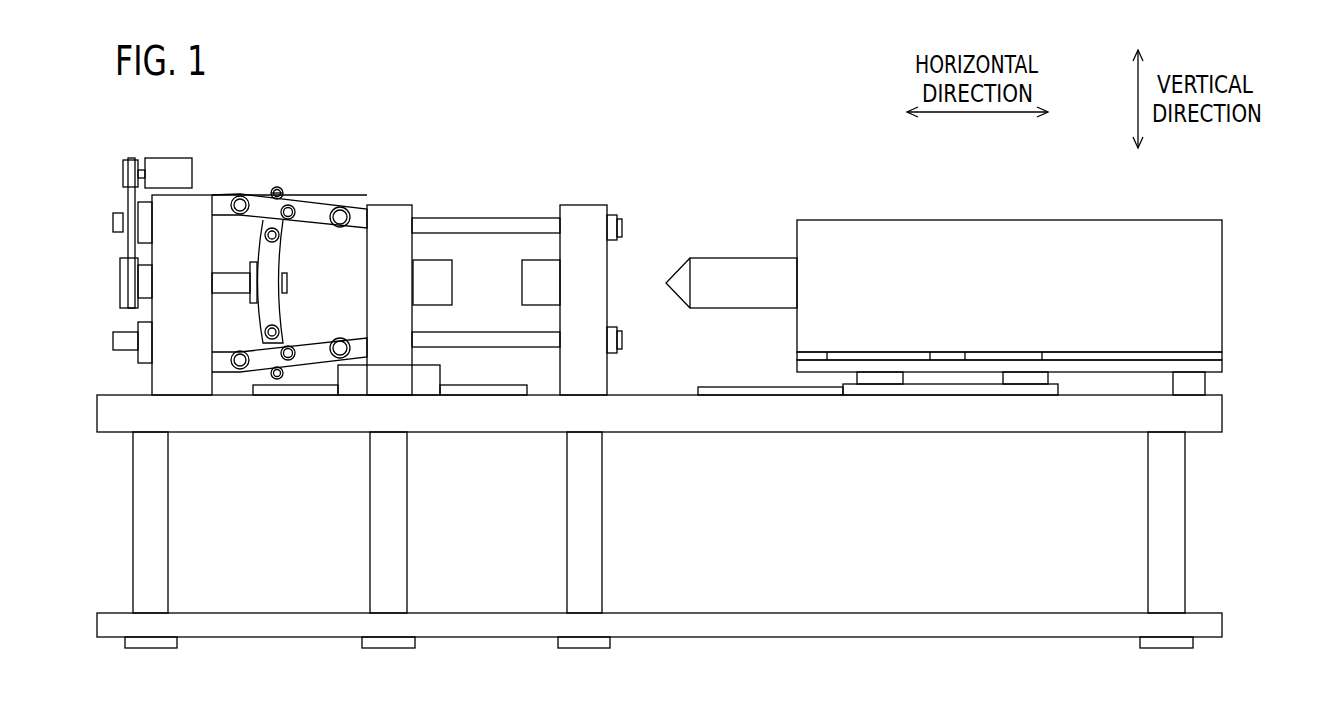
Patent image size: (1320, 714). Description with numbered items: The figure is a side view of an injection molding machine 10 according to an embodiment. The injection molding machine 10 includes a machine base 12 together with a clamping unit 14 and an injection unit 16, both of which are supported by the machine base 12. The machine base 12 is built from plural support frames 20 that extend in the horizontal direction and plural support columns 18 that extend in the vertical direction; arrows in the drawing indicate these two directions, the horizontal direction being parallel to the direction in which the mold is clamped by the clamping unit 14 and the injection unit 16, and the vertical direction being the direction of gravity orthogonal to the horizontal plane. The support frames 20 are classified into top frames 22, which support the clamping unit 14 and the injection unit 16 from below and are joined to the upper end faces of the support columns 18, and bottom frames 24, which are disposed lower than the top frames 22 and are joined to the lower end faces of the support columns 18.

The injection molding machine 10 is at (400, 106).
The machine base 12 is at (79, 392).
The clamping unit 14 is at (385, 205).
The injection unit 16 is at (857, 220).
The support columns 18 is at (1212, 529).
The support frames 20 is at (1274, 393).
The top frames 22 is at (1212, 415).
The bottom frames 24 is at (1212, 627).